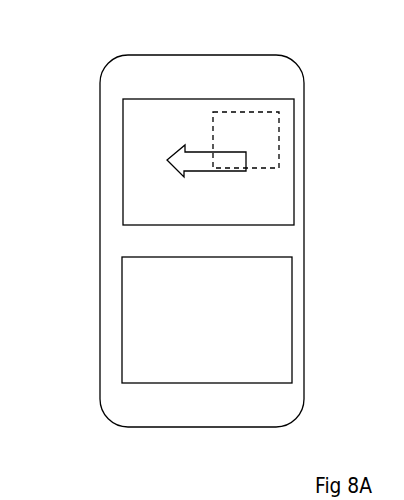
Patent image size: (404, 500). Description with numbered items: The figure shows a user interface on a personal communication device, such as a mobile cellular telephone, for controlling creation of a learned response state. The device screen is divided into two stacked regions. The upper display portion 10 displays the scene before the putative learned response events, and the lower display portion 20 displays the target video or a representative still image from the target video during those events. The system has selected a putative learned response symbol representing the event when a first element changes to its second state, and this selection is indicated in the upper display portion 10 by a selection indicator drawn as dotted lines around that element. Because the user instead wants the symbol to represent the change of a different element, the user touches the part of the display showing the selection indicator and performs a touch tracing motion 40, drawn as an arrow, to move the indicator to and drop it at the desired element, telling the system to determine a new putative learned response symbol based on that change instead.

The upper display portion 10 is at (137, 150).
The lower display portion 20 is at (133, 285).
The touch tracing motion 40 is at (205, 171).